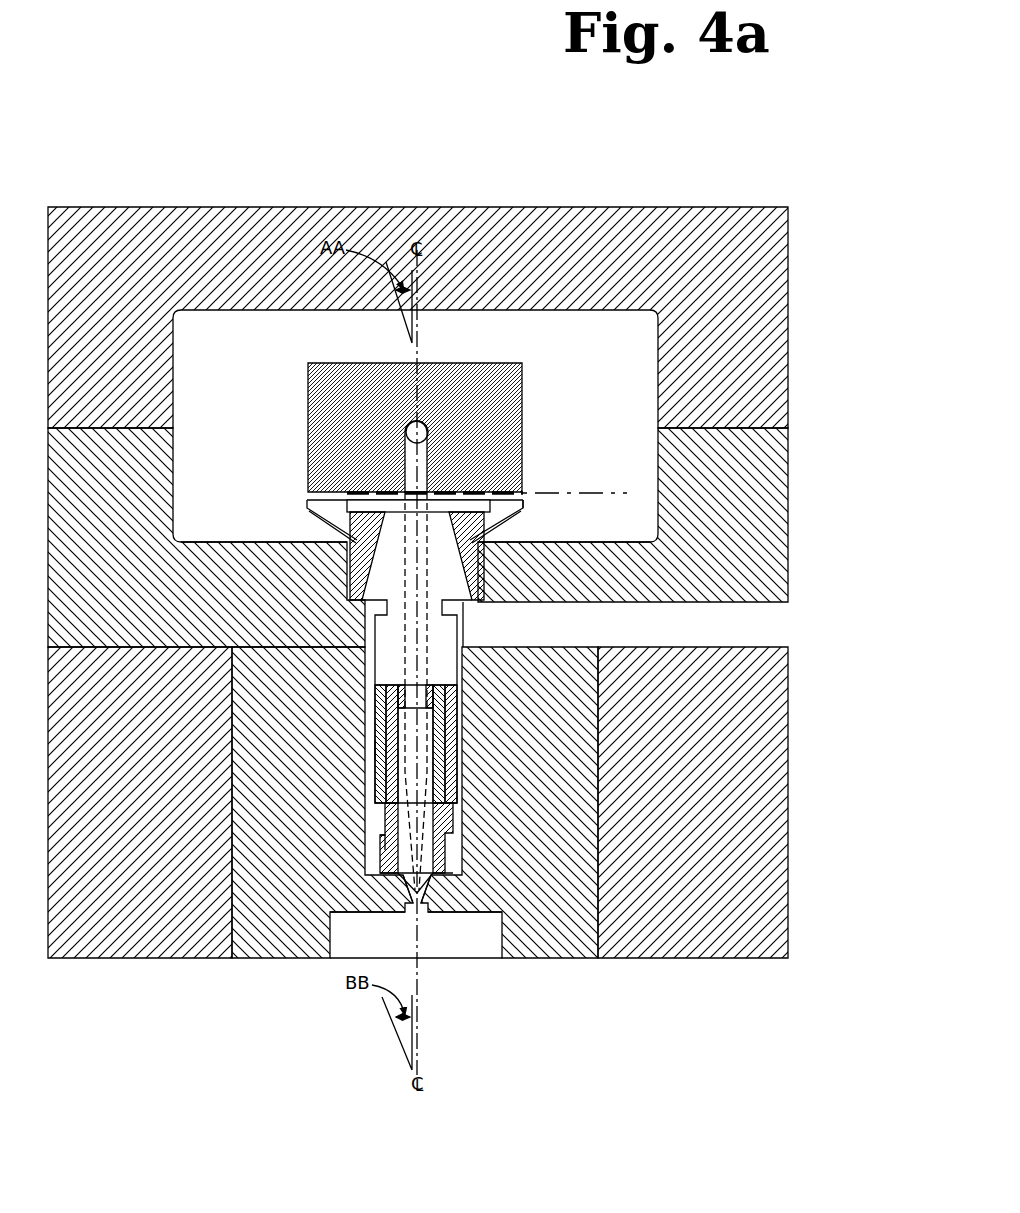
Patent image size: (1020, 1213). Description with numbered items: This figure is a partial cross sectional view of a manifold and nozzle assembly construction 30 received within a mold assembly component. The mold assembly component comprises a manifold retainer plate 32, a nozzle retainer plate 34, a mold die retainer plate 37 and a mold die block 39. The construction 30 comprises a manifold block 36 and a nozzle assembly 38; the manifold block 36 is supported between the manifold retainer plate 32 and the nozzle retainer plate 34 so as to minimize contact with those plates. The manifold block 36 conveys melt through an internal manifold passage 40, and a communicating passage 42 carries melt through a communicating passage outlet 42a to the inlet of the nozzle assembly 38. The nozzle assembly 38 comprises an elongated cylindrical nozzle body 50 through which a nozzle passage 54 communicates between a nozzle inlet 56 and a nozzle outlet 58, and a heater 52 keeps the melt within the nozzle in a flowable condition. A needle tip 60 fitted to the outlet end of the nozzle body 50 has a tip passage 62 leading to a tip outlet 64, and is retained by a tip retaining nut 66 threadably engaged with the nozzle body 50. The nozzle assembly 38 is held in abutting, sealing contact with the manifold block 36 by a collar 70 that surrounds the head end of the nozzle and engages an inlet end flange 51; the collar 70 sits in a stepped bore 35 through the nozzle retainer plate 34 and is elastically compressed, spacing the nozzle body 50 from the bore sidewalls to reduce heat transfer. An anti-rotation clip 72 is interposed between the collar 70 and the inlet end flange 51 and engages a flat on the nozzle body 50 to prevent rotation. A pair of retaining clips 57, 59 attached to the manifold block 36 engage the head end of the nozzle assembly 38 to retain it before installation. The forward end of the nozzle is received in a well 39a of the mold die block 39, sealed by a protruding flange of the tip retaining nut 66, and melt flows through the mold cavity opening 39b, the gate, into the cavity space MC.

The manifold and nozzle assembly construction 30 is at (434, 409).
The manifold retainer plate 32 is at (698, 257).
The nozzle retainer plate 34 is at (107, 510).
The stepped bore 35 is at (352, 546).
The manifold block 36 is at (500, 403).
The mold die retainer plate 37 is at (125, 787).
The nozzle assembly 38 is at (500, 538).
The mold die block 39 is at (275, 702).
The well 39a is at (383, 840).
The mold cavity opening 39b is at (421, 908).
The manifold passage 40 is at (414, 424).
The communicating passage 42 is at (418, 458).
The communicating passage outlet 42a is at (414, 488).
The nozzle body 50 is at (432, 703).
The inlet end flange 51 is at (360, 492).
The heater 52 is at (433, 660).
The nozzle passage 54 is at (410, 603).
The nozzle inlet 56 is at (472, 562).
The retaining clip 57 is at (340, 511).
The nozzle outlet 58 is at (376, 735).
The retaining clip 59 is at (526, 503).
The needle tip 60 is at (400, 771).
The tip passage 62 is at (440, 828).
The tip outlet 64 is at (437, 890).
The tip retaining nut 66 is at (381, 855).
The collar 70 is at (421, 499).
The anti-rotation clip 72 is at (345, 506).
The cavity space MC is at (376, 942).